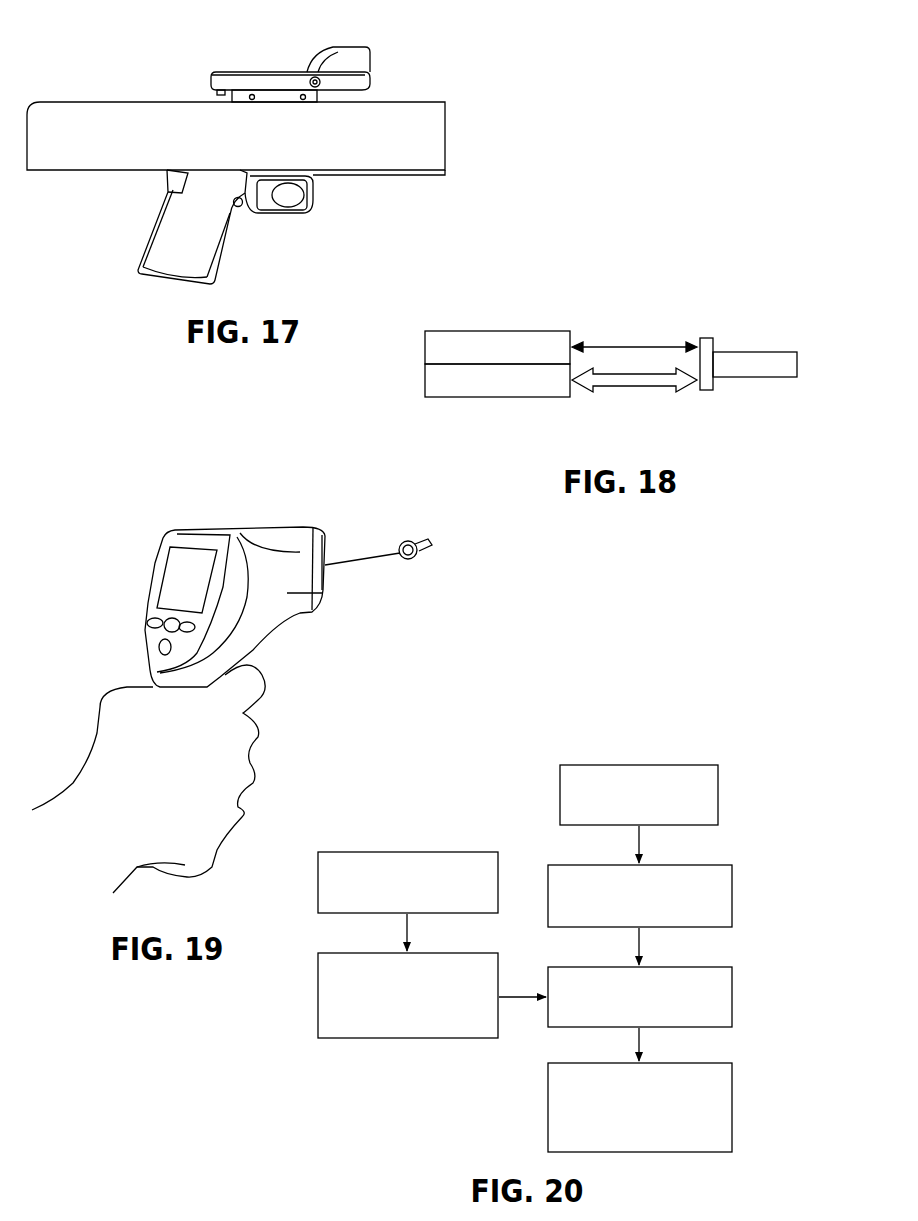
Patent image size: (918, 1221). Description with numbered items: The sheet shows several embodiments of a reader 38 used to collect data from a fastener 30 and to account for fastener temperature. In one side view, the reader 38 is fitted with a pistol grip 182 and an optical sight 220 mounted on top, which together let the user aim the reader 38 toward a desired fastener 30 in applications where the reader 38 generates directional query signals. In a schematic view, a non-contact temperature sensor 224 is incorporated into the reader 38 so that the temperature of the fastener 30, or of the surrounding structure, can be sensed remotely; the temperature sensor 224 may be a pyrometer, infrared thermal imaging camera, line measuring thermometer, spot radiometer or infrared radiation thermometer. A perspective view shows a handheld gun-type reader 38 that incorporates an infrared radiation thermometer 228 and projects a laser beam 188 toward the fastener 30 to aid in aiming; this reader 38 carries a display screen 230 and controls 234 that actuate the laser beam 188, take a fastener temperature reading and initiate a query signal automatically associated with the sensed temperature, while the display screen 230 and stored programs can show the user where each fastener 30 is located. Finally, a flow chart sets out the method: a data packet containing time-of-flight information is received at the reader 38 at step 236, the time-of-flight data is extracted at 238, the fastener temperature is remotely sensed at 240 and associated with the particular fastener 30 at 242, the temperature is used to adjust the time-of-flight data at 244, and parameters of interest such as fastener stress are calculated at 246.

In FIG. 18, the fastener 30 is at (752, 366).
In FIG. 17, the reader 38 is at (65, 150).
In FIG. 18, the reader 38 is at (497, 397).
In FIG. 19, the reader 38 is at (287, 593).
In FIG. 17, the pistol grip 182 is at (128, 263).
In FIG. 19, the laser beam 188 is at (360, 553).
In FIG. 17, the optical sight 220 is at (290, 84).
In FIG. 18, the temperature sensor 224 is at (497, 331).
In FIG. 19, the infrared radiation thermometer 228 is at (315, 530).
In FIG. 19, the display screen 230 is at (147, 558).
In FIG. 19, the controls 234 is at (138, 629).
In FIG. 20, the receiving data packet step 236 is at (718, 793).
In FIG. 20, the extracting time-of-flight data step 238 is at (732, 893).
In FIG. 20, the remotely sensing temperature step 240 is at (407, 852).
In FIG. 20, the associating sensed temperature step 242 is at (407, 1038).
In FIG. 20, the adjusting time-of-flight data step 244 is at (732, 995).
In FIG. 20, the calculating parameters of interest step 246 is at (732, 1105).